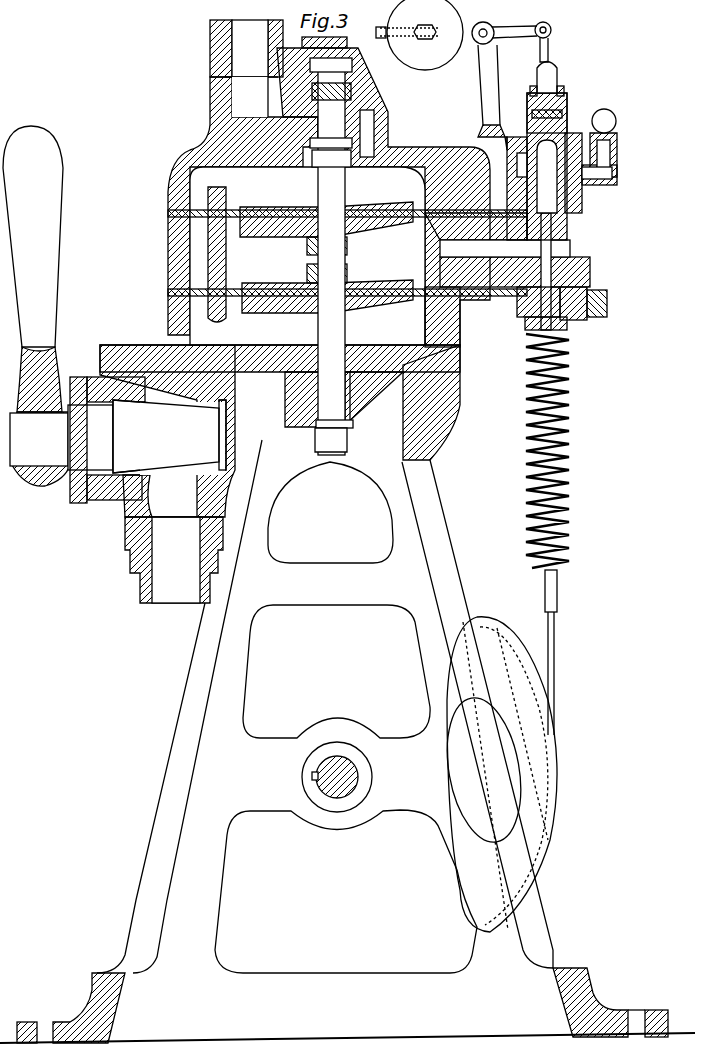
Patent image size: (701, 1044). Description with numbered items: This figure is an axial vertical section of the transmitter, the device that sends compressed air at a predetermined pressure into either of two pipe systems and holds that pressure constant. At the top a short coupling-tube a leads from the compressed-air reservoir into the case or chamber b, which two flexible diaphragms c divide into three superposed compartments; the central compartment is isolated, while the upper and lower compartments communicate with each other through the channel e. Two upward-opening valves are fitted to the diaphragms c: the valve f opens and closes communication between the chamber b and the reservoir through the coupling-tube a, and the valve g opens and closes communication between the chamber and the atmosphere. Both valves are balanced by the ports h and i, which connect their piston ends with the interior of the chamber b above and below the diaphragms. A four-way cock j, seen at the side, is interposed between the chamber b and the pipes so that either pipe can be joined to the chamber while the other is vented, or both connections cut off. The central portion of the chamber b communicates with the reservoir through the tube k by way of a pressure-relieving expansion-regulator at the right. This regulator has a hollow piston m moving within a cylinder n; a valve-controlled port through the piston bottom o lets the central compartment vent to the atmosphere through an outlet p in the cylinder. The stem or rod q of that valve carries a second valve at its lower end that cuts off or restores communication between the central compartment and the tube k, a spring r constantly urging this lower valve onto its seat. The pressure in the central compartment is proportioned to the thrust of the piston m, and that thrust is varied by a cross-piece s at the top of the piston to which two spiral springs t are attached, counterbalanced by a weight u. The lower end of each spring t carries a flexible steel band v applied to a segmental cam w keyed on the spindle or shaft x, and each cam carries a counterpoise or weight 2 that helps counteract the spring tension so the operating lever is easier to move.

The coupling-tube a is at (246, 68).
The case or chamber b is at (178, 186).
The flexible membranes or diaphragms c is at (238, 218).
The channel e is at (347, 256).
The valve f is at (318, 148).
The valve g is at (317, 395).
The channel or port h is at (372, 112).
The channel or port i is at (350, 398).
The four-way cock j is at (114, 314).
The tube k is at (600, 298).
The hollow piston m is at (575, 195).
The cylinder n is at (520, 196).
The bottom of piston o is at (578, 236).
The outlet or opening p is at (508, 158).
The stem or rod q is at (574, 271).
The spring r is at (522, 322).
The cross-piece s is at (557, 86).
The spiral springs t is at (560, 398).
The counterpoise or weight u is at (463, 35).
The flexible steel band v is at (553, 632).
The segmental cam w is at (540, 765).
The spindle or shaft x is at (325, 764).
The counterpoise or weight 2 is at (453, 750).